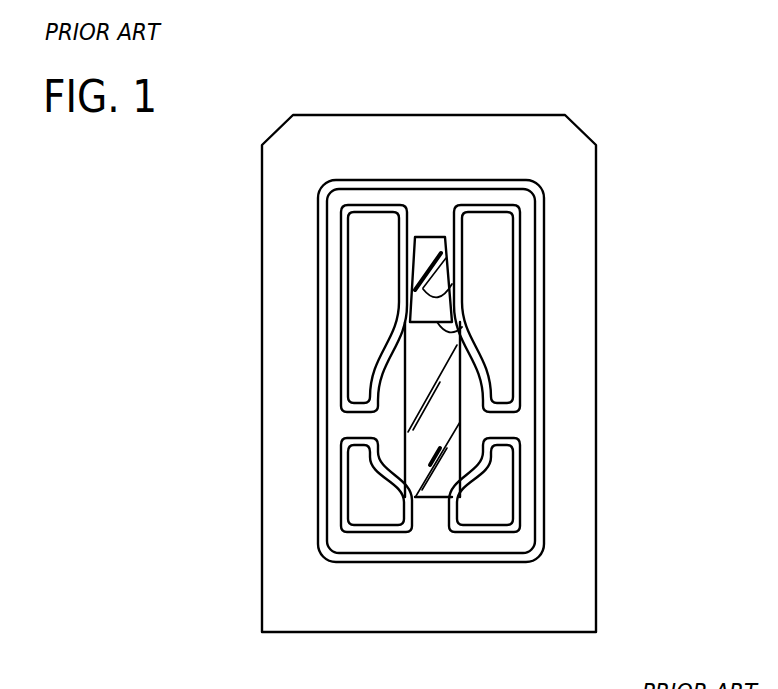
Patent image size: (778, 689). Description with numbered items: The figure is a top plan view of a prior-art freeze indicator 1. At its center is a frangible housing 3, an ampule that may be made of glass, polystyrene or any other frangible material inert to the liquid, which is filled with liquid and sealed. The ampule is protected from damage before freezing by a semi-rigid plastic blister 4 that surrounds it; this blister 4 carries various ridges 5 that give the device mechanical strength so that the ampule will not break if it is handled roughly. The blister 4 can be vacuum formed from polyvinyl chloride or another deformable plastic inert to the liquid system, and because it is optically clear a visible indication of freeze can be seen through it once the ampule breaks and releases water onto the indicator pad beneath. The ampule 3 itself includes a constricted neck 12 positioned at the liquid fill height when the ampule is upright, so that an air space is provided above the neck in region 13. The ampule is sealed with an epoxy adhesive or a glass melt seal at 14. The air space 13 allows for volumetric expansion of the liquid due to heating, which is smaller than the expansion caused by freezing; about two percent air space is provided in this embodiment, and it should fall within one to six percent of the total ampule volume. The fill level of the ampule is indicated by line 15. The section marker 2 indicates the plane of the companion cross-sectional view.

The freeze indicator 1 is at (598, 122).
The section line 2 is at (357, 100).
The frangible housing 3 is at (410, 390).
The semi-rigid plastic blister 4 is at (530, 382).
The ridges 5 is at (358, 424).
The constricted neck 12 is at (412, 298).
The air space region 13 is at (451, 292).
The seal 14 is at (440, 266).
The fill level line 15 is at (456, 330).